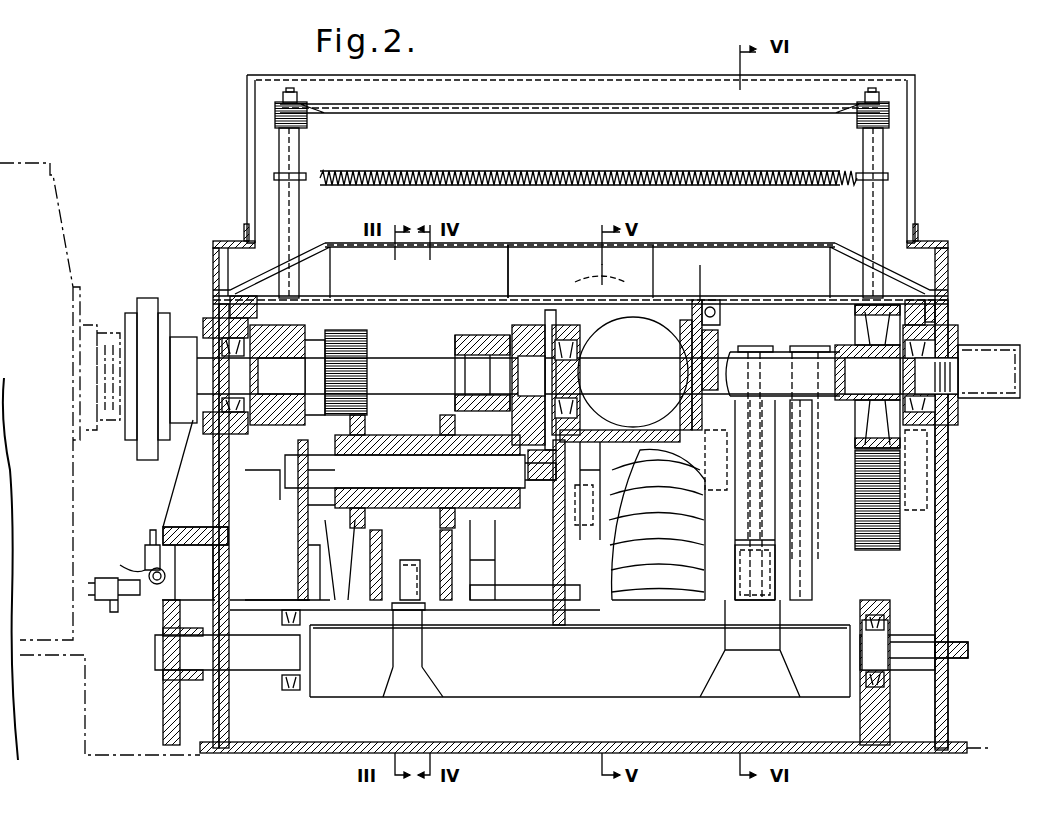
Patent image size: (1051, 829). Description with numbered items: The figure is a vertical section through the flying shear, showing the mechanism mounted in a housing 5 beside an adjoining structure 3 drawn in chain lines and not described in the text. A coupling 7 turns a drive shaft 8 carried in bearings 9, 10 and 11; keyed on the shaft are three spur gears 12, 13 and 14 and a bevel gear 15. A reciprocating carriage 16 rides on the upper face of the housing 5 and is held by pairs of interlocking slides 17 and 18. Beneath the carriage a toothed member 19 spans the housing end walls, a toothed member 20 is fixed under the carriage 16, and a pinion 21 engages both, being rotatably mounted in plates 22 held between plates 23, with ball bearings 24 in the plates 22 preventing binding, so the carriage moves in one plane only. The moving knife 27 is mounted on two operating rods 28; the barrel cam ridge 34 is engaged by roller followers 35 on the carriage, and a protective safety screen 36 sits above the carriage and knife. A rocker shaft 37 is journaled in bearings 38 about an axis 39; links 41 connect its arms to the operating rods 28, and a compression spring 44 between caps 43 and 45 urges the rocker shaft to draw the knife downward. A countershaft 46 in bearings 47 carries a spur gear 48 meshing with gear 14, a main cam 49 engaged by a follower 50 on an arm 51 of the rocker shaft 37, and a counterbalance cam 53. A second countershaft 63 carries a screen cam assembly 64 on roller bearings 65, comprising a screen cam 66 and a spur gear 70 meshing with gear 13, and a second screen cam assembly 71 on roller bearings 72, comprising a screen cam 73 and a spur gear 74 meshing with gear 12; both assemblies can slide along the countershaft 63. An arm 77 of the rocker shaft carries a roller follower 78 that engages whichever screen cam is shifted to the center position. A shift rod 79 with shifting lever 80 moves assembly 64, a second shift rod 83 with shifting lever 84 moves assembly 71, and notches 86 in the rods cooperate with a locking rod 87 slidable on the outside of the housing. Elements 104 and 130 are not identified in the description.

The machine frame 3 is at (66, 228).
The housing 5 is at (948, 452).
The coupling 7 is at (148, 298).
The drive shaft 8 is at (230, 368).
The bearing 9 is at (228, 415).
The bearing 10 is at (565, 355).
The bearing 11 is at (935, 345).
The spur gear 12 is at (365, 355).
The spur gear 13 is at (465, 340).
The spur gear 14 is at (860, 300).
The bevel gear 15 is at (550, 285).
The reciprocating carriage 16 is at (788, 248).
The interlocking slide 17 is at (225, 320).
The interlocking slide 18 is at (250, 300).
The member 19 is at (700, 395).
The member 20 is at (712, 292).
The pinion 21 is at (685, 352).
The plate 22 is at (690, 310).
The plate 23 is at (678, 355).
The ball bearing 24 is at (720, 310).
The moving knife 27 is at (675, 185).
The operating rod 28 is at (298, 195).
The ridge 34 is at (597, 285).
The roller follower 35 is at (612, 288).
The protective safety screen 36 is at (570, 78).
The rocker shaft 37 is at (514, 700).
The bearing 38 is at (282, 682).
The axis of rotation 39 is at (207, 648).
The link 41 is at (518, 312).
The cap 43 is at (645, 580).
The spring 44 is at (675, 575).
The cap 45 is at (630, 460).
The countershaft 46 is at (785, 498).
The bearing 47 is at (708, 450).
The spur gear 48 is at (890, 532).
The main cam 49 is at (772, 346).
The main cam follower 50 is at (750, 600).
The arm 51 is at (730, 650).
The counterbalance cam 53 is at (803, 346).
The countershaft 63 is at (430, 483).
The screen cam assembly 64 is at (440, 509).
The roller bearing 65 is at (425, 435).
The screen cam 66 is at (448, 600).
The spur gear 70 is at (515, 605).
The second screen cam assembly 71 is at (305, 510).
The roller bearing 72 is at (320, 430).
The screen cam 73 is at (375, 600).
The spur gear 74 is at (340, 600).
The arm 77 is at (418, 658).
The roller follower 78 is at (423, 530).
The shift rod 79 is at (158, 545).
The shifting lever 80 is at (480, 530).
The second shift rod 83 is at (138, 590).
The shifting lever 84 is at (340, 545).
The notch 86 is at (110, 578).
The locking rod 87 is at (165, 578).
The hub 104 is at (270, 425).
The coupling 130 is at (95, 374).